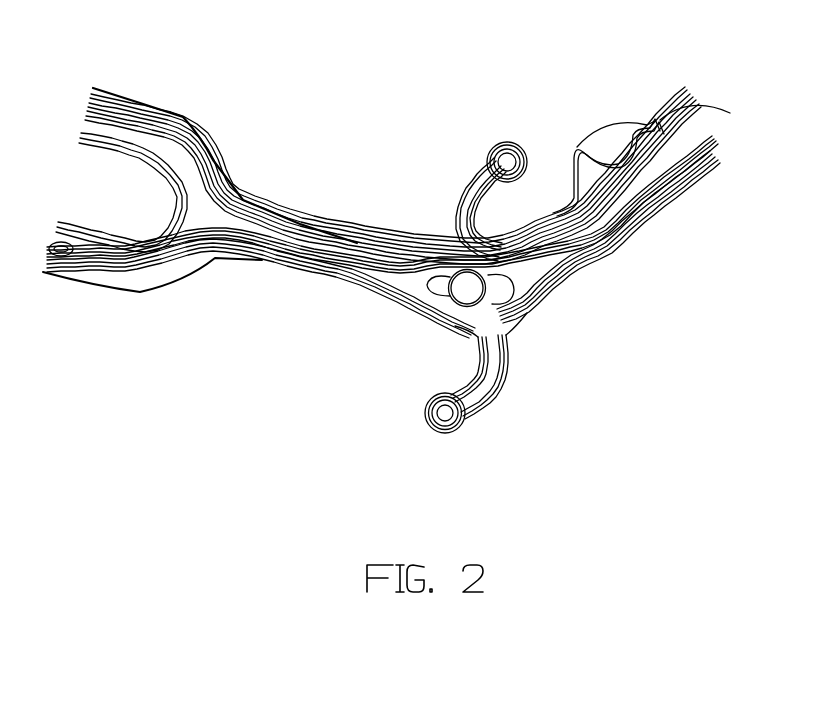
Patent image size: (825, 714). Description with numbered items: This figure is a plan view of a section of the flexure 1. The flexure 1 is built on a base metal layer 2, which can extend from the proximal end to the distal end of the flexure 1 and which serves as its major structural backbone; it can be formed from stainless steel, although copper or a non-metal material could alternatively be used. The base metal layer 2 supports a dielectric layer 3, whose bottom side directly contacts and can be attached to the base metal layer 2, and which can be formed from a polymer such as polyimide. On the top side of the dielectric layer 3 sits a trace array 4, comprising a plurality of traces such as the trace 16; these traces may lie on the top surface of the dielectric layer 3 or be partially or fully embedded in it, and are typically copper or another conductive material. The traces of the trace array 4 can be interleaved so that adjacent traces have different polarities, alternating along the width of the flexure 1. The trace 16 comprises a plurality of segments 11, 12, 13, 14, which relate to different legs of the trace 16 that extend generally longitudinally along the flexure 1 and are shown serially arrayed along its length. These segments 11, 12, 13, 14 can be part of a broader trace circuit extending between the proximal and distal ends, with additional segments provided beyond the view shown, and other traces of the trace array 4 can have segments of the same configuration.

The flexure 1 is at (465, 61).
The base metal layer 2 is at (367, 229).
The dielectric layer 3 is at (242, 262).
The trace array 4 is at (330, 257).
The segment 11 is at (102, 260).
The segment 12 is at (450, 245).
The segment 13 is at (635, 148).
The segment 14 is at (655, 121).
The trace 16 is at (175, 227).